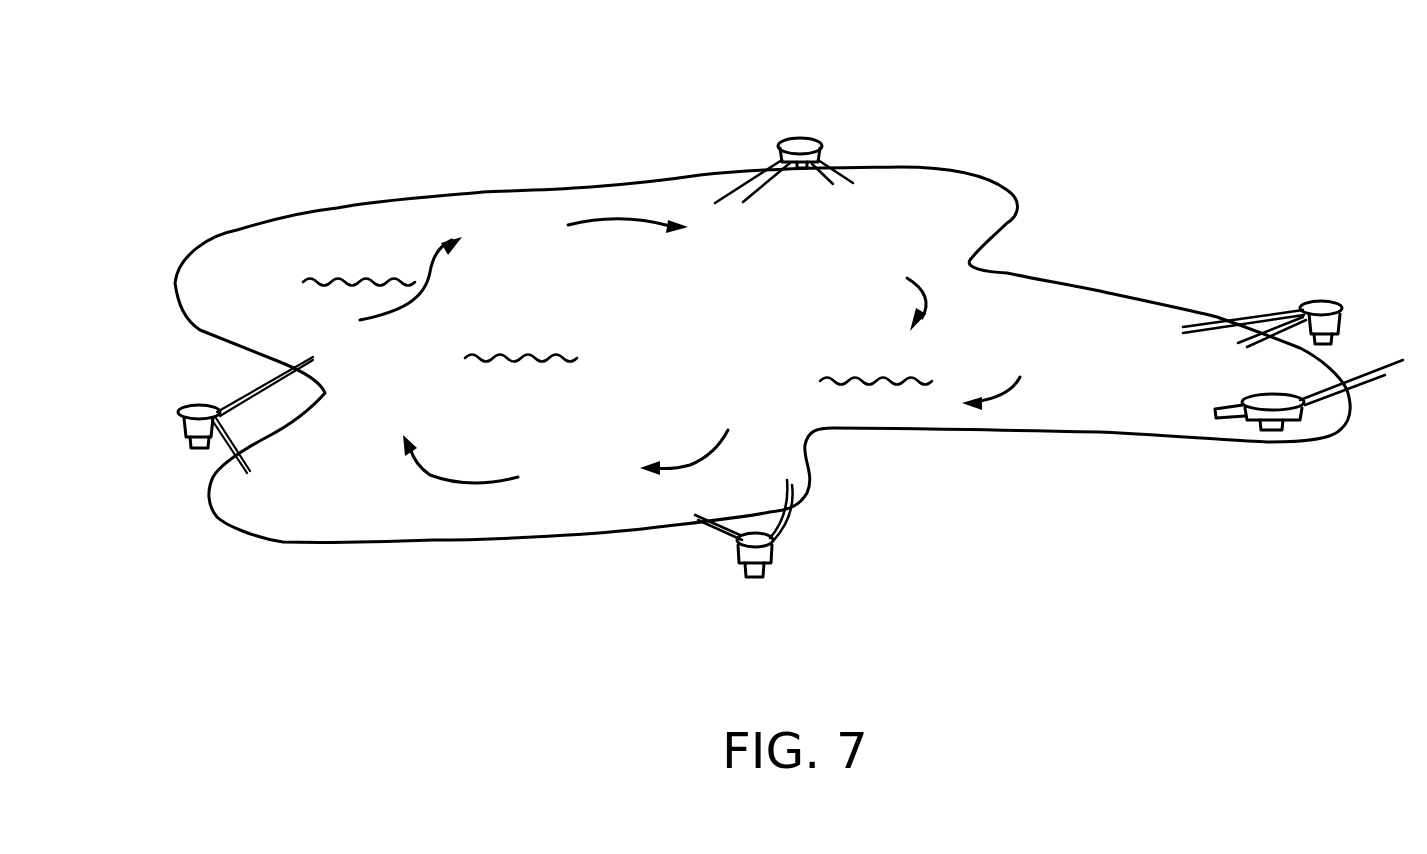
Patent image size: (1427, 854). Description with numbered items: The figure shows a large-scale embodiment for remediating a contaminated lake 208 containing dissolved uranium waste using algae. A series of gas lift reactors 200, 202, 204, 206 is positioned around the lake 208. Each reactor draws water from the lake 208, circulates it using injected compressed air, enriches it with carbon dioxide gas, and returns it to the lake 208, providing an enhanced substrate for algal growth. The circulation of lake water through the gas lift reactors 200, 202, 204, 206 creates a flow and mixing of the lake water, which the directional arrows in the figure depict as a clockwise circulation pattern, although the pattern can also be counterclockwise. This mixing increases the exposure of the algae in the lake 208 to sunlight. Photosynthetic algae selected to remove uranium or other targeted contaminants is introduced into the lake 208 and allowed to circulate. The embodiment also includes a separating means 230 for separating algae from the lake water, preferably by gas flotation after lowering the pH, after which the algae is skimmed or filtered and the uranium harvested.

The gas lift reactor 200 is at (160, 430).
The gas lift reactor 202 is at (799, 118).
The gas lift reactor 204 is at (752, 602).
The gas lift reactor 206 is at (1316, 276).
The contaminated lake 208 is at (1053, 310).
The separating means 230 is at (1313, 425).